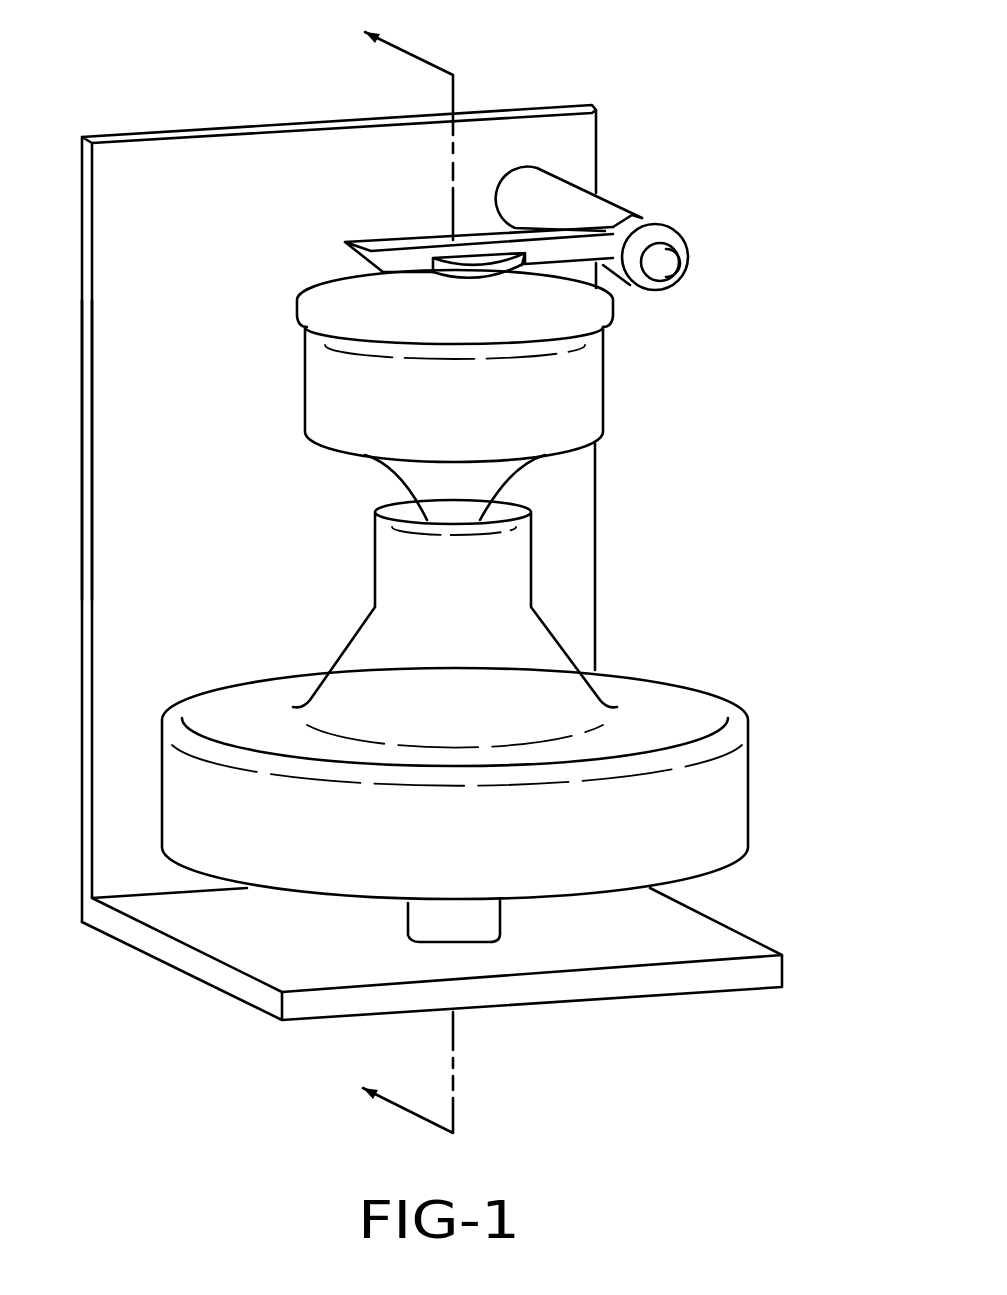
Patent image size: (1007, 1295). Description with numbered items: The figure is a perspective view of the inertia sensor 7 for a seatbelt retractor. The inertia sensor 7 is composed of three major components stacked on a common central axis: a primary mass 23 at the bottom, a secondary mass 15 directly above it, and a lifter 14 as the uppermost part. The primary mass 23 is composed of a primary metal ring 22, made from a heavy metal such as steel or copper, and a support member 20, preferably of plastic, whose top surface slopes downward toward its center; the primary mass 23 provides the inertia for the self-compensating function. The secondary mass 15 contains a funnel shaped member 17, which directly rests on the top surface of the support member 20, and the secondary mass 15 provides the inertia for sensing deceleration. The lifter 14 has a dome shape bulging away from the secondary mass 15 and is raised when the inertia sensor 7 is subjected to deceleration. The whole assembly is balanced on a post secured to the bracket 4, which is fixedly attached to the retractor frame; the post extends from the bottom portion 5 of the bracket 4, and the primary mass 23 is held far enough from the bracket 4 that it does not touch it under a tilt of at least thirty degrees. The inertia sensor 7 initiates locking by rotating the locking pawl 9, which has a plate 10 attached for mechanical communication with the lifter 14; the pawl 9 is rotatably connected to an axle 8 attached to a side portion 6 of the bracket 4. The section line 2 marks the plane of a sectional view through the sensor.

The section line 2- 2 is at (394, 572).
The bracket 4 is at (128, 132).
The bottom portion 5 is at (212, 933).
The side portion 6 is at (123, 420).
The inertia sensor 7 is at (787, 185).
The axle 8 is at (553, 197).
The locking pawl 9 is at (367, 247).
The plate 10 is at (475, 273).
The lifter 14 is at (335, 303).
The secondary mass 15 is at (565, 406).
The funnel shaped member 17 is at (495, 473).
The support member 20 is at (528, 665).
The primary metal ring 22 is at (698, 828).
The primary mass 23 is at (672, 712).